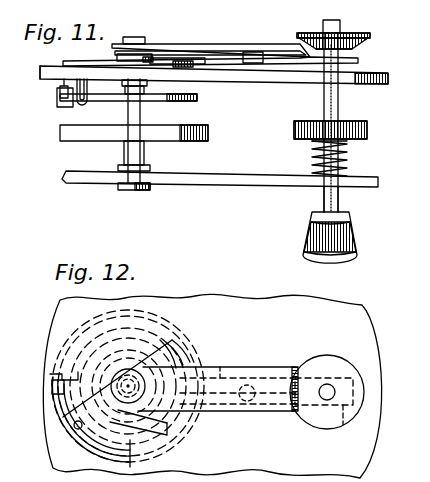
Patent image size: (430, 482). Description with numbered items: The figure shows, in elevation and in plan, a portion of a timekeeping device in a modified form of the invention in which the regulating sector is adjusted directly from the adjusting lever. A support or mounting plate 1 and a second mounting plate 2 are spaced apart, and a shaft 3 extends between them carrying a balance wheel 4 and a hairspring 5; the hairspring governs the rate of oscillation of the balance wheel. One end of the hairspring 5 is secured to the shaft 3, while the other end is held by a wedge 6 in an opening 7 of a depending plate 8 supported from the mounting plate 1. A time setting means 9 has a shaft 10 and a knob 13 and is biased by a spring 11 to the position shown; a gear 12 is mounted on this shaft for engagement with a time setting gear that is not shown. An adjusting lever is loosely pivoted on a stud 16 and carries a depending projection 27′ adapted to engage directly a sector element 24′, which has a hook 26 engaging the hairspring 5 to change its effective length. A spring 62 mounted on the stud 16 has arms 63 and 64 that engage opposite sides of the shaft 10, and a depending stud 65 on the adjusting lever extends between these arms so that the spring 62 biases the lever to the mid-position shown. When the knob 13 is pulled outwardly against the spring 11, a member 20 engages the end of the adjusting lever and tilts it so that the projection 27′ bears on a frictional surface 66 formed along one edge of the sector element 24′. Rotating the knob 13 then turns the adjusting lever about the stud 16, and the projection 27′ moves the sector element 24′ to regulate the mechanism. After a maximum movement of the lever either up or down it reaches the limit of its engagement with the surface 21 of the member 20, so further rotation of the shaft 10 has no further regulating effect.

In FIG. 11, the mounting plate 1 is at (388, 78).
In FIG. 11, the second mounting plate 2 is at (378, 182).
In FIG. 11, the shaft 3 is at (140, 112).
In FIG. 12, the shaft 3 is at (128, 386).
In FIG. 11, the balance wheel 4 is at (195, 141).
In FIG. 12, the balance wheel 4 is at (66, 347).
In FIG. 11, the hairspring 5 is at (185, 101).
In FIG. 12, the hairspring 5 is at (85, 320).
In FIG. 11, the wedge 6 is at (57, 100).
In FIG. 12, the wedge 6 is at (52, 388).
In FIG. 11, the opening 7 is at (35, 70).
In FIG. 11, the depending plate 8 is at (58, 88).
In FIG. 12, the depending plate 8 is at (50, 374).
In FIG. 11, the time setting means 9 is at (338, 97).
In FIG. 12, the shaft 10 is at (335, 392).
In FIG. 11, the spring 11 is at (347, 162).
In FIG. 11, the gear 12 is at (367, 130).
In FIG. 11, the knob 13 is at (350, 228).
In FIG. 11, the stud 16 is at (135, 50).
In FIG. 11, the member 20 is at (370, 36).
In FIG. 12, the member 20 is at (360, 385).
In FIG. 11, the surface 21 is at (360, 44).
In FIG. 11, the sector element 24′ is at (180, 64).
In FIG. 12, the sector element 24′ is at (180, 352).
In FIG. 11, the hook 26 is at (87, 103).
In FIG. 12, the hook 26 is at (74, 427).
In FIG. 11, the depending projection 27′ is at (200, 51).
In FIG. 11, the spring 62 is at (250, 52).
In FIG. 12, the spring 62 is at (220, 367).
In FIG. 12, the arm 63 is at (343, 378).
In FIG. 12, the arm 64 is at (343, 425).
In FIG. 12, the depending stud 65 is at (247, 401).
In FIG. 11, the frictional surface 66 is at (190, 67).
In FIG. 12, the frictional surface 66 is at (170, 350).